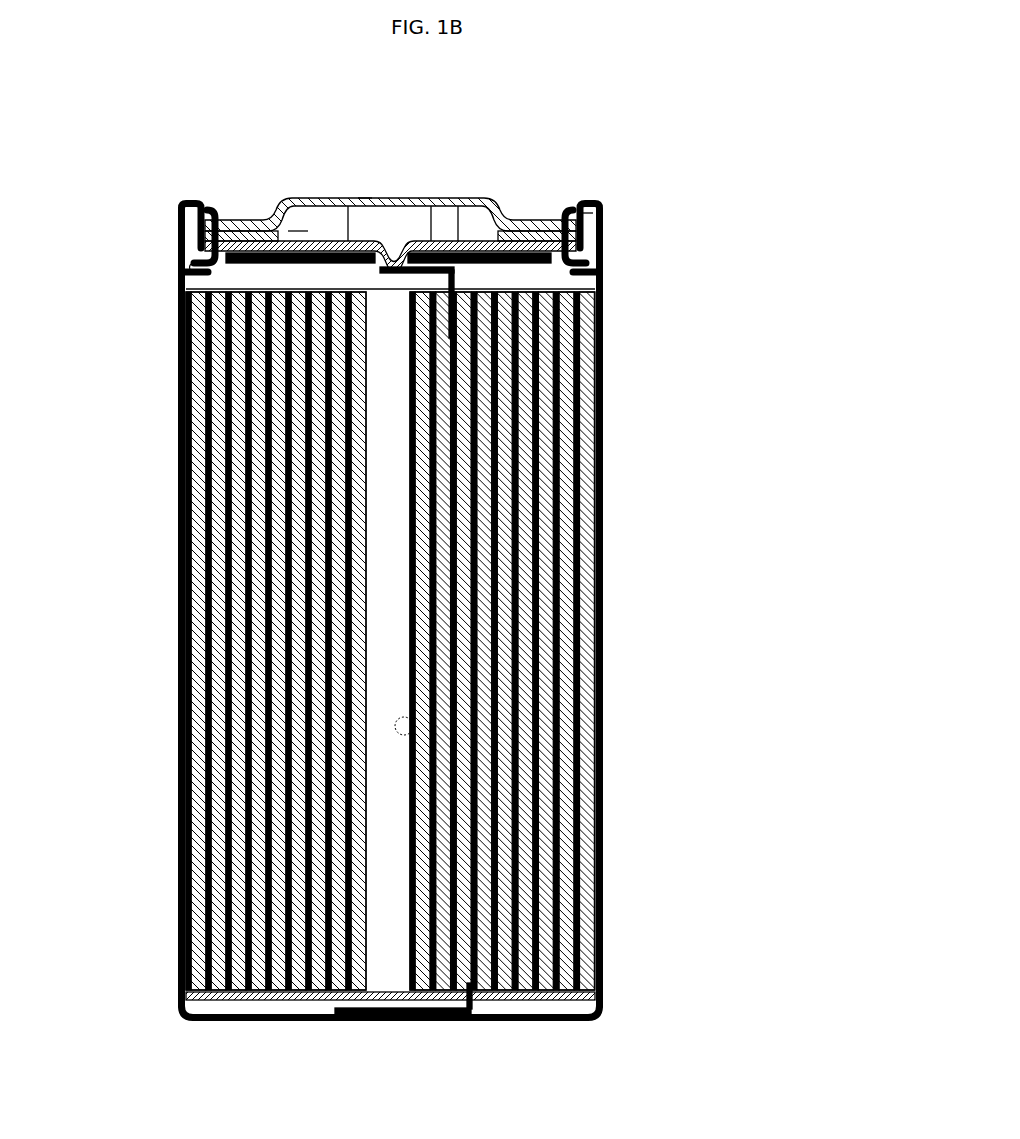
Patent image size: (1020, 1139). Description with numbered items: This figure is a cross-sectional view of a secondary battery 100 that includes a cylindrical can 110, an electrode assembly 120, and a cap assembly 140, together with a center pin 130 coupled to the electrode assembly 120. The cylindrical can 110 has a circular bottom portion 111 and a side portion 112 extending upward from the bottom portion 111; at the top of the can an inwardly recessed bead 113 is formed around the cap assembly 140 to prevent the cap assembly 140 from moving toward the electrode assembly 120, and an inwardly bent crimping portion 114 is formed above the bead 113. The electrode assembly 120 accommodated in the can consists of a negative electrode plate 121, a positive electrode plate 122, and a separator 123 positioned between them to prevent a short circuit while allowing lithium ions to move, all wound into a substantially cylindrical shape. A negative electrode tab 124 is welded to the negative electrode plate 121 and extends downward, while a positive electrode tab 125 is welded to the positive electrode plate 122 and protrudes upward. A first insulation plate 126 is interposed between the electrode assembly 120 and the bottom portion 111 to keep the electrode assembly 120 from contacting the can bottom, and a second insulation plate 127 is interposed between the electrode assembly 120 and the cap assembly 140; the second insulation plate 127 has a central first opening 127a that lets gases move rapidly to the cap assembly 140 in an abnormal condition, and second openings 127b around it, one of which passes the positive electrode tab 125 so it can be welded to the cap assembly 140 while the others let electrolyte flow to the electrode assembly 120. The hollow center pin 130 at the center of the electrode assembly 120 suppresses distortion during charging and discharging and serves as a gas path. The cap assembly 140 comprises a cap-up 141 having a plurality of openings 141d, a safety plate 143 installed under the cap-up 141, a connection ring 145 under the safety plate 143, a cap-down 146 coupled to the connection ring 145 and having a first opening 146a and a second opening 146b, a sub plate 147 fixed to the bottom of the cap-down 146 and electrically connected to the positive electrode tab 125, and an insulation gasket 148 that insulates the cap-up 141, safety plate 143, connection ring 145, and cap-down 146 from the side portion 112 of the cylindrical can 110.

The secondary battery 100 is at (650, 144).
The cylindrical can 110 is at (446, 618).
The bottom portion 111 is at (235, 1015).
The side portion 112 is at (592, 843).
The bead 113 is at (595, 262).
The crimping portion 114 is at (573, 192).
The electrode assembly 120 is at (476, 641).
The negative electrode plate 121 is at (690, 662).
The positive electrode plate 122 is at (590, 655).
The separator 123 is at (590, 600).
The negative electrode tab 124 is at (390, 1008).
The positive electrode tab 125 is at (578, 310).
The first insulation plate 126 is at (530, 992).
The second insulation plate 127 is at (269, 331).
The first opening 127a is at (380, 282).
The second openings 127b is at (300, 313).
The center pin 130 is at (405, 722).
The cap assembly 140 is at (392, 183).
The cap-up 141 is at (483, 190).
The openings 141d is at (357, 213).
The safety plate 143 is at (448, 235).
The connection ring 145 is at (226, 192).
The cap-down 146 is at (522, 228).
The first opening 146a is at (387, 245).
The second opening 146b is at (290, 233).
The sub plate 147 is at (190, 262).
The insulation gasket 148 is at (594, 214).